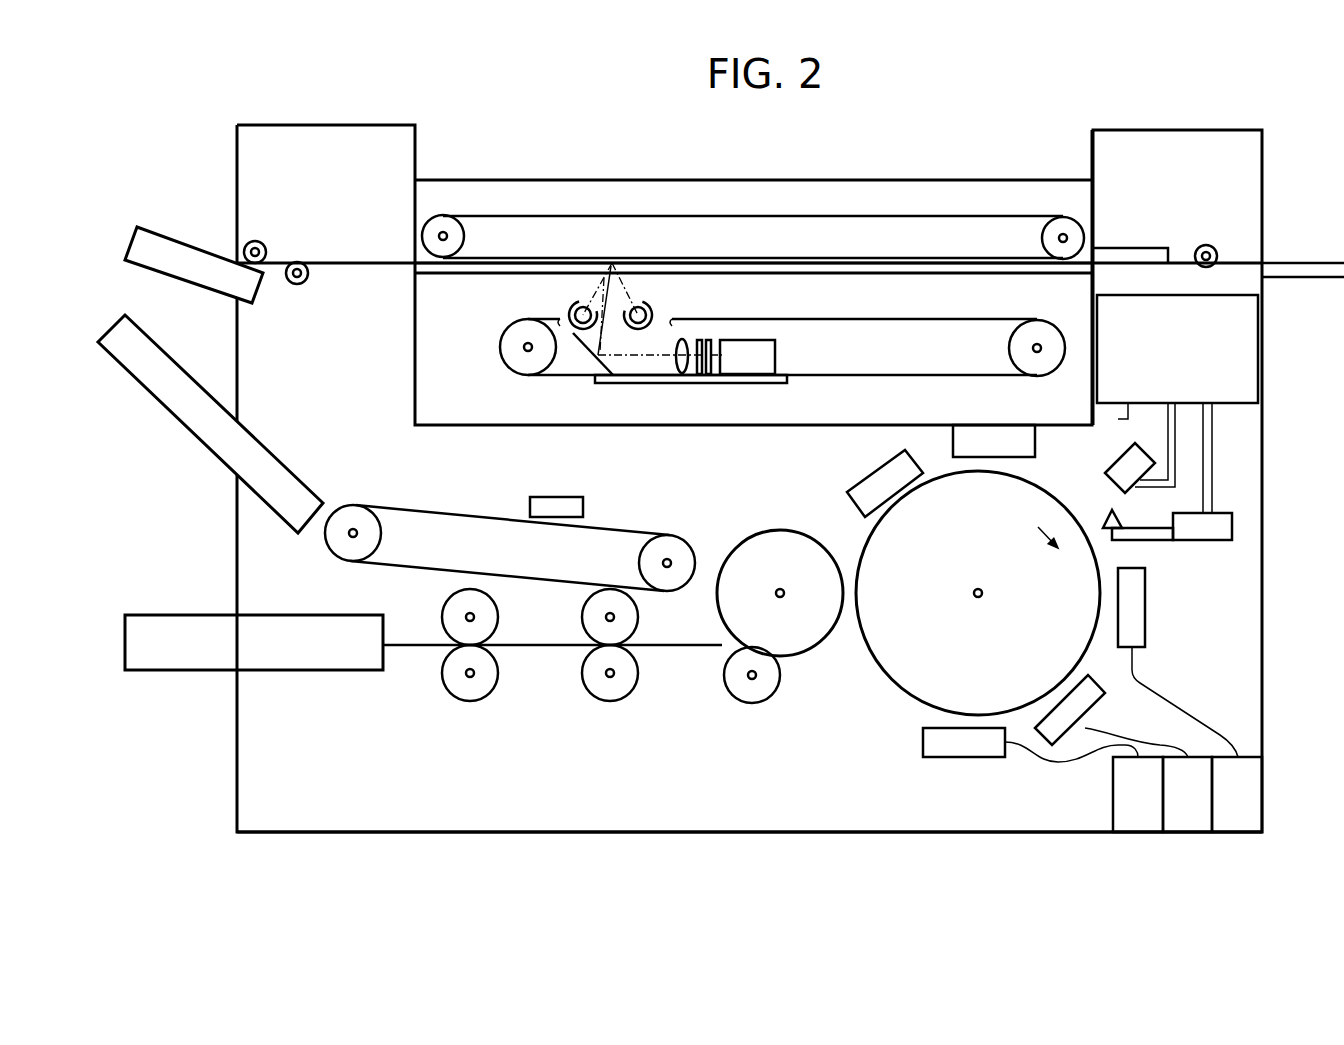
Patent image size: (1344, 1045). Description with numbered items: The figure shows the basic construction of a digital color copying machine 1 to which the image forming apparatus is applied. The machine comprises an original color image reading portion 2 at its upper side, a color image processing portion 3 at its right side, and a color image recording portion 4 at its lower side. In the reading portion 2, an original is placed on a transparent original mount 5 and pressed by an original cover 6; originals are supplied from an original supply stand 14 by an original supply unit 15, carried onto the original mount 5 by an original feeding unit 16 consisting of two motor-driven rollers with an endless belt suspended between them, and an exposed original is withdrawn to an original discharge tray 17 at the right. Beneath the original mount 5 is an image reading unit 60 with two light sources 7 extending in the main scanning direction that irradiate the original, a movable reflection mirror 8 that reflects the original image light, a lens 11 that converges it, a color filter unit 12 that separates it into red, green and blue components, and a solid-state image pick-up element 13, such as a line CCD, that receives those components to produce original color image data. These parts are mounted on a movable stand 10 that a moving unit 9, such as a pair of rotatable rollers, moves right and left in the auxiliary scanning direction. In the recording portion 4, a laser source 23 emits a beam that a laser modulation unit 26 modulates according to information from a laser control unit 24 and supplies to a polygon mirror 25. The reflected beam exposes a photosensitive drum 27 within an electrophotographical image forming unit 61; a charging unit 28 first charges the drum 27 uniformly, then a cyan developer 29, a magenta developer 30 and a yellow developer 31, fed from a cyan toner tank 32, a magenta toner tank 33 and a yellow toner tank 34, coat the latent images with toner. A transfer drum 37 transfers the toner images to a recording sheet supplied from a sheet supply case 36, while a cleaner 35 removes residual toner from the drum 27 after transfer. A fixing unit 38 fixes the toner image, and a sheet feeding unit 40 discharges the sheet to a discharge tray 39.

The digital color copying machine 1 is at (206, 531).
The original color image reading portion 2 is at (208, 180).
The color image processing portion 3 is at (1242, 402).
The color image recording portion 4 is at (578, 842).
The transparent original mount 5 is at (460, 276).
The original cover 6 is at (681, 193).
The light sources 7 is at (611, 319).
The movable reflection mirror 8 is at (578, 355).
The moving unit 9 is at (1047, 342).
The movable stand 10 is at (620, 385).
The lens 11 is at (678, 374).
The color filter unit 12 is at (705, 372).
The solid-state image pick-up element 13 is at (770, 359).
The original supply stand 14 is at (168, 242).
The original supply unit 15 is at (262, 245).
The original feeding unit 16 is at (441, 222).
The original discharge tray 17 is at (1308, 270).
The laser source 23 is at (1104, 522).
The laser control unit 24 is at (1217, 541).
The polygon mirror 25 is at (1118, 468).
The laser modulation unit 26 is at (1160, 541).
The photosensitive drum 27 is at (897, 637).
The charging unit 28 is at (1008, 437).
The cyan developer 29 is at (1140, 635).
The magenta developer 30 is at (1047, 726).
The yellow developer 31 is at (945, 750).
The cyan toner tank 32 is at (1245, 793).
The magenta toner tank 33 is at (1188, 822).
The yellow toner tank 34 is at (1140, 822).
The cleaner 35 is at (865, 493).
The sheet supply case 36 is at (186, 657).
The transfer drum 37 is at (745, 617).
The fixing unit 38 is at (554, 507).
The discharge tray 39 is at (155, 373).
The sheet feeding unit 40 is at (350, 520).
The image reading unit 60 is at (805, 294).
The electrophotographical image forming unit 61 is at (878, 798).